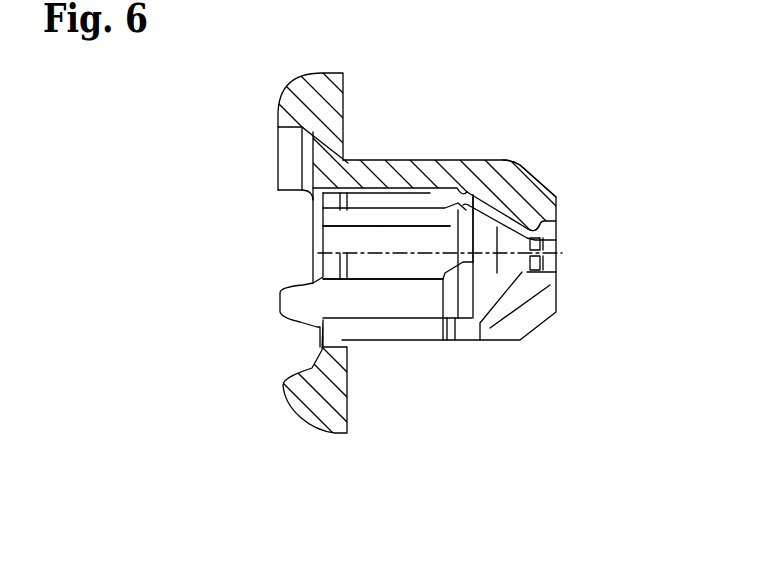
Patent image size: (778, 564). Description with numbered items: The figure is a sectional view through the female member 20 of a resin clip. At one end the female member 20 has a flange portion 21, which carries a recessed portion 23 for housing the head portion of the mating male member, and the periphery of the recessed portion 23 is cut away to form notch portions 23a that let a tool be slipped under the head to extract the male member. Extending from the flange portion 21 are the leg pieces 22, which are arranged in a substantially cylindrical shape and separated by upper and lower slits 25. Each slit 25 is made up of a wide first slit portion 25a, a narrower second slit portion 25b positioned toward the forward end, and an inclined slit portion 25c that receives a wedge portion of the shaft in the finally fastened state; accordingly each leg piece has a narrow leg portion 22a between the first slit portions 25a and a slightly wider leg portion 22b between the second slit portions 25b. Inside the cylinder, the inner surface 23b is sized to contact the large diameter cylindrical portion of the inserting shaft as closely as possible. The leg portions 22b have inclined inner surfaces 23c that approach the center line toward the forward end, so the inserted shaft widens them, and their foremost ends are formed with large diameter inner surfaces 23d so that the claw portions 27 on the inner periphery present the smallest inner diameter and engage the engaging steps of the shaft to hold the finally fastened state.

The female member 20 is at (460, 22).
The flange portion 21 is at (346, 88).
The leg pieces 22 is at (384, 160).
The leg portion 22a is at (423, 172).
The leg portion 22b is at (530, 178).
The recessed portion 23 is at (317, 373).
The notch portions 23a is at (300, 233).
The inner surface 23b is at (505, 165).
The inclined inner surfaces 23c is at (530, 212).
The large diameter inner surfaces 23d is at (535, 238).
The upper and lower slits 25 is at (641, 410).
The first slit portion 25a is at (380, 217).
The second slit portion 25b is at (497, 227).
The inclined slit portion 25c is at (452, 175).
The claw portions 27 is at (530, 232).